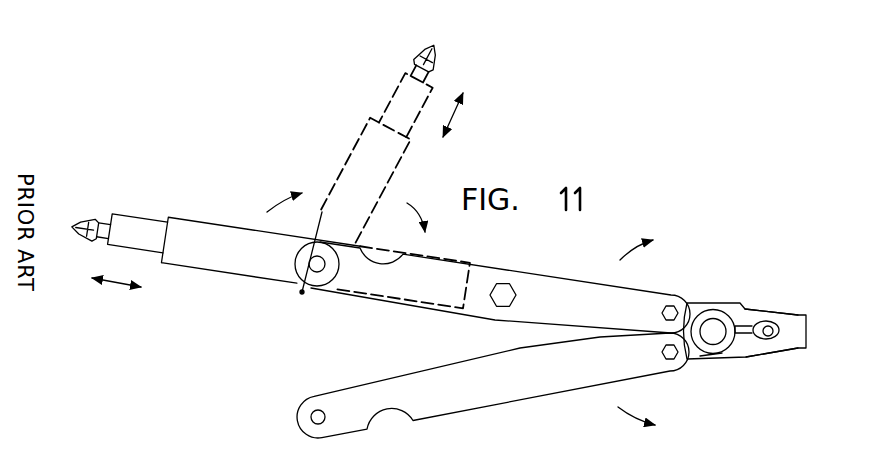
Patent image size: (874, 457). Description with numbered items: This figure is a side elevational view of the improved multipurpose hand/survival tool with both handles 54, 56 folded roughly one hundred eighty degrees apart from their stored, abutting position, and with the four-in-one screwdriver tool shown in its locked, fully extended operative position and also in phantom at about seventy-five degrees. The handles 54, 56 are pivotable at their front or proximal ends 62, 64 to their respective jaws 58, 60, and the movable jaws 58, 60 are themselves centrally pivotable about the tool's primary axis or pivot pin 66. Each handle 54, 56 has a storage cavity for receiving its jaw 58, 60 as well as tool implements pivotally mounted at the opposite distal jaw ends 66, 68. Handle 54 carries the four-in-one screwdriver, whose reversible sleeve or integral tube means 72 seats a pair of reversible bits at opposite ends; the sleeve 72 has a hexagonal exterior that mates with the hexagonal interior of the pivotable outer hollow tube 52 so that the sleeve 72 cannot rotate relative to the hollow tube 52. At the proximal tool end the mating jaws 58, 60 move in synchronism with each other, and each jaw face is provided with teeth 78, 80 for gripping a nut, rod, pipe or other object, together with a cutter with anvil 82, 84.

The outer hollow tube 52 is at (223, 263).
The reversible sleeve 72 is at (132, 232).
The primary pivot pin 66 is at (302, 292).
The handle 54 is at (614, 316).
The handle 56 is at (536, 384).
The distal jaw end 68 is at (308, 391).
The proximal end 62 is at (675, 290).
The proximal end 64 is at (677, 376).
The jaw 60 is at (738, 302).
The jaw 58 is at (748, 352).
The teeth 78 is at (778, 323).
The teeth 80 is at (781, 338).
The cutter with anvil 82 is at (752, 325).
The cutter with anvil 84 is at (722, 353).